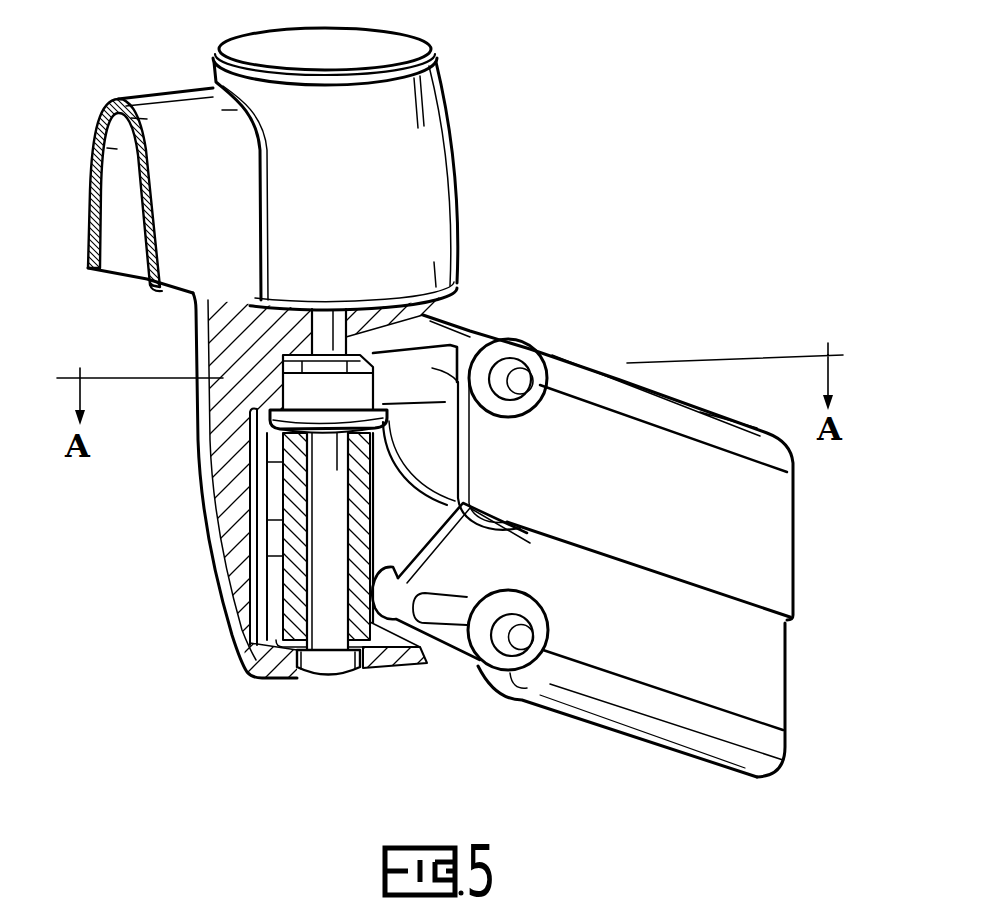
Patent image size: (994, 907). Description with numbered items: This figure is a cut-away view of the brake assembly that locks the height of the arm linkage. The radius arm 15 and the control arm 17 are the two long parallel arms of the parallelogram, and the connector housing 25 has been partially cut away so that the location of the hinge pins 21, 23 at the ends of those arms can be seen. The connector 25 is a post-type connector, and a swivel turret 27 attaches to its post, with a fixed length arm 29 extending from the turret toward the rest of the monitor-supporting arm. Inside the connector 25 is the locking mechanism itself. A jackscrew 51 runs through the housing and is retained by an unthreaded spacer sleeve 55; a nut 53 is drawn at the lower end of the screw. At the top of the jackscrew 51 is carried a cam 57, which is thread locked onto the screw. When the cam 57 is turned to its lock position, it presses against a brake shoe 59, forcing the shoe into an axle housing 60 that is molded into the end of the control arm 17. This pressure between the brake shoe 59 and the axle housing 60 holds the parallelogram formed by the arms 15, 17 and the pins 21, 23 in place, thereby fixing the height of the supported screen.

The radius arm 15 is at (715, 412).
The control arm 17 is at (730, 673).
The hinge pin 21 is at (523, 388).
The hinge pin 23 is at (520, 640).
The connector 25 is at (233, 478).
The swivel turret 27 is at (408, 132).
The fixed length arm 29 is at (197, 133).
The jackscrew 51 is at (323, 617).
The nut 53 is at (337, 667).
The spacer sleeve 55 is at (288, 502).
The cam 57 is at (333, 402).
The brake shoe 59 is at (467, 340).
The axle housing 60 is at (458, 314).